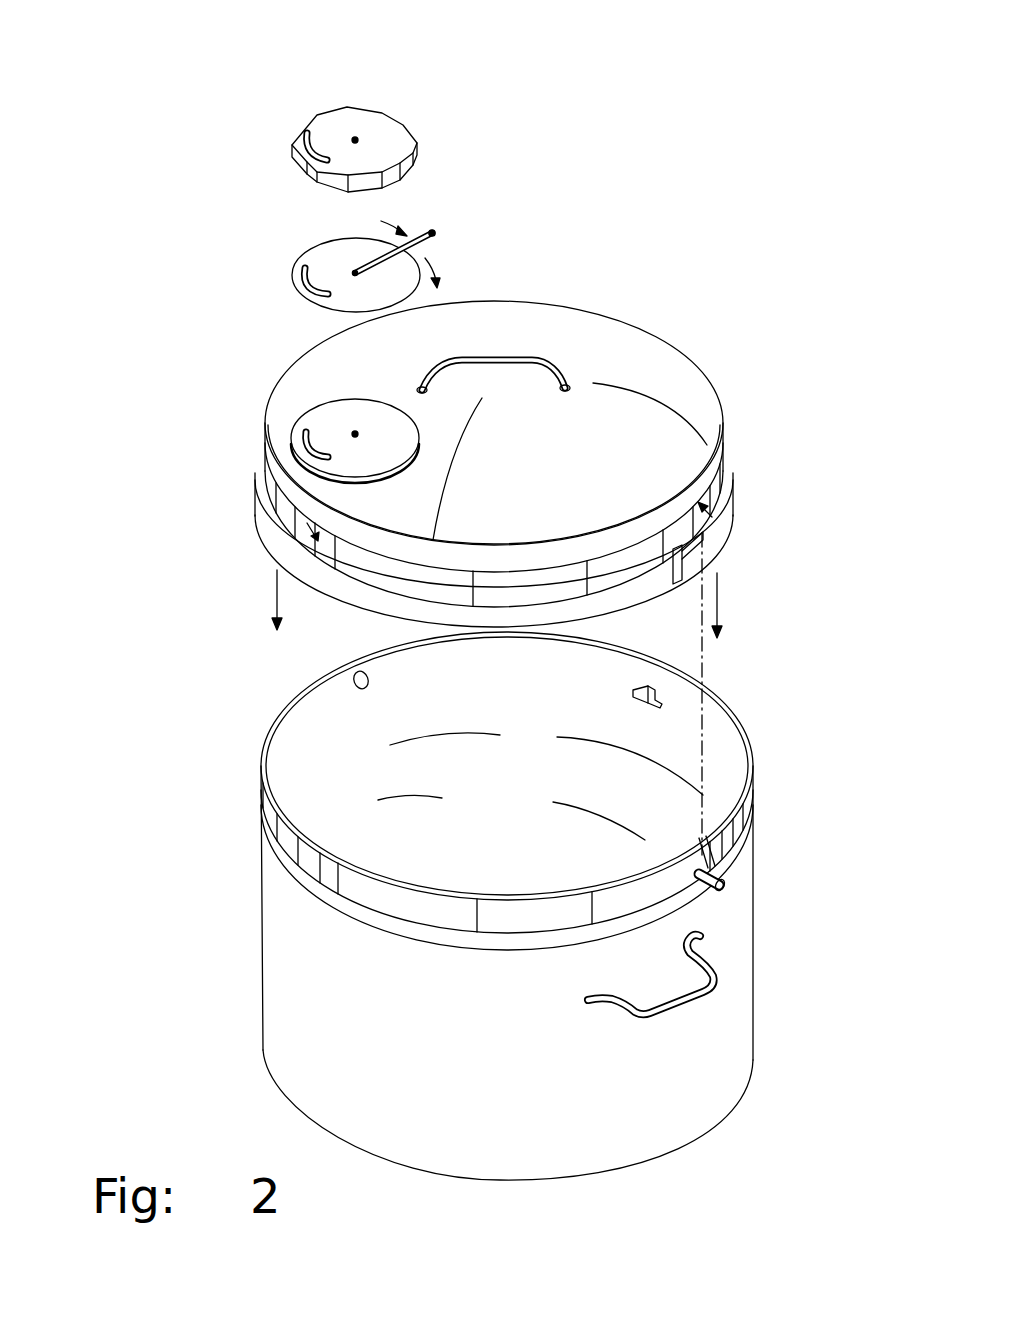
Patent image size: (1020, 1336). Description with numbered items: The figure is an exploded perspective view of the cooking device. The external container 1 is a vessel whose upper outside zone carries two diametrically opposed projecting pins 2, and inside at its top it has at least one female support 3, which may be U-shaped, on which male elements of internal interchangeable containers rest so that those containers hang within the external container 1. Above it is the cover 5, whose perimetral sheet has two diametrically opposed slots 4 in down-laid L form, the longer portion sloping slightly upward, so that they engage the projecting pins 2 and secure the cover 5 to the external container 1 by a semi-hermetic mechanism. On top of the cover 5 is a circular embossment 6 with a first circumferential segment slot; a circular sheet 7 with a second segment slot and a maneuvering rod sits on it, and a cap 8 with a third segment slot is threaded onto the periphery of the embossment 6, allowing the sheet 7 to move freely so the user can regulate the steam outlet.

The external container 1 is at (753, 973).
The projecting pins 2 is at (752, 847).
The female support 3 is at (652, 693).
The slots 4 is at (702, 538).
The cover 5 is at (722, 422).
The circular embossment 6 is at (385, 408).
The circular sheet 7 is at (338, 242).
The cap 8 is at (393, 112).